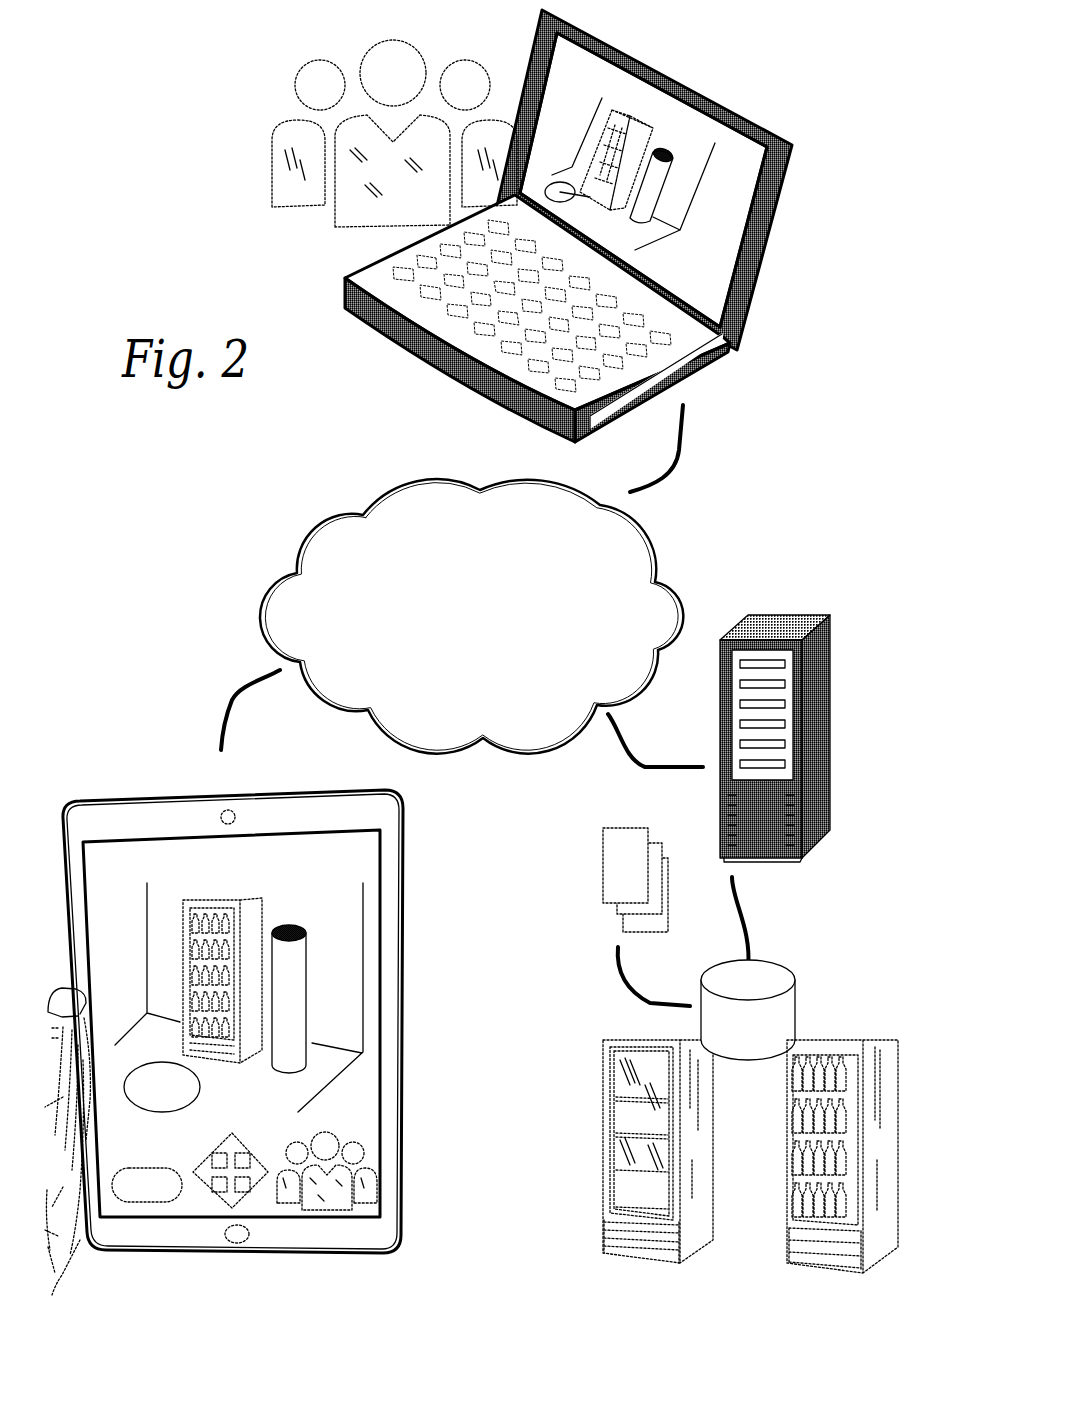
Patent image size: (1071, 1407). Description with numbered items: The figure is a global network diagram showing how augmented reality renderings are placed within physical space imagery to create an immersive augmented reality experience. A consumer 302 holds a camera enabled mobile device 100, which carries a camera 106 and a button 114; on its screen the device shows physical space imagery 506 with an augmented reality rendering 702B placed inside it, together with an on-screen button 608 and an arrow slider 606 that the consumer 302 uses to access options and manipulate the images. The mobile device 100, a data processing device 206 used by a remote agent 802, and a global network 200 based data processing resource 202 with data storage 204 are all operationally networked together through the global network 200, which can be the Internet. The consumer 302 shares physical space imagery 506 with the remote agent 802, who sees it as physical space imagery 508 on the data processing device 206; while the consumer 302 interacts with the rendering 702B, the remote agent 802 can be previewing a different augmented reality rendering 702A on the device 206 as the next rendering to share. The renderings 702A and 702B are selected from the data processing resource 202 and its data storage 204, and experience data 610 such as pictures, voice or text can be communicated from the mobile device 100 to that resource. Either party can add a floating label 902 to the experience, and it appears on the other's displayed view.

The camera enabled mobile device 100 is at (390, 823).
The camera 106 is at (213, 812).
The button 114 is at (242, 1238).
The global network 200 is at (471, 616).
The data processing resource 202 is at (752, 612).
The data storage 204 is at (773, 973).
The data processing device 206 is at (725, 338).
The consumer 302 is at (67, 1242).
The physical space imagery 506 is at (239, 1088).
The physical space imagery 508 is at (723, 202).
The arrow slider 606 is at (253, 1172).
The button 608 is at (137, 1187).
The experience data 610 is at (623, 887).
The augmented reality rendering 702A is at (627, 133).
The augmented reality rendering 702B is at (850, 1060).
The remote agent 802 is at (285, 192).
The floating label 902 is at (180, 1060).